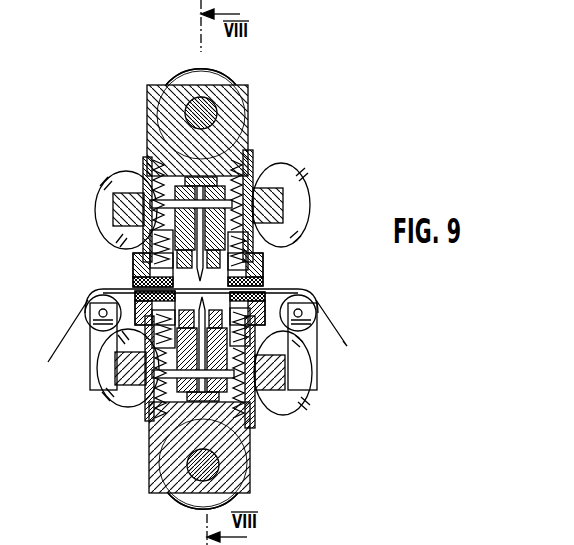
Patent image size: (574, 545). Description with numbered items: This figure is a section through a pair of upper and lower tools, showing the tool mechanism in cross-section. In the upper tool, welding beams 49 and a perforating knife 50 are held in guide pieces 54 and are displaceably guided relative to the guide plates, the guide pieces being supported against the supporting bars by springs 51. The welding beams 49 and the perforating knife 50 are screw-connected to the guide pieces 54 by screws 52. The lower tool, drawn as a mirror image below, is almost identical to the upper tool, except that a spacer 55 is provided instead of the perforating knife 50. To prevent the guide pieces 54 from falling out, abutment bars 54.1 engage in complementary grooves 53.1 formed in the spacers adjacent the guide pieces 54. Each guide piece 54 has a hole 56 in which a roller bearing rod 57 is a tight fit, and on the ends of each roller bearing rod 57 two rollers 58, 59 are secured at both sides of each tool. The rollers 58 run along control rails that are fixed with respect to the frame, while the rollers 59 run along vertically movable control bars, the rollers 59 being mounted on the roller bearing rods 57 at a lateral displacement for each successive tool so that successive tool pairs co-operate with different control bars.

The welding beam 49 is at (150, 253).
The perforating knife 50 is at (133, 276).
The spring 51 is at (262, 270).
The screw 52 is at (284, 195).
The groove 53.1 is at (160, 154).
The guide piece 54 is at (246, 124).
The abutment bar 54.1 is at (248, 157).
The spacer 55 is at (262, 346).
The hole 56 is at (236, 100).
The roller bearing rod 57 is at (186, 112).
The roller 58 is at (210, 79).
The roller 59 is at (202, 289).